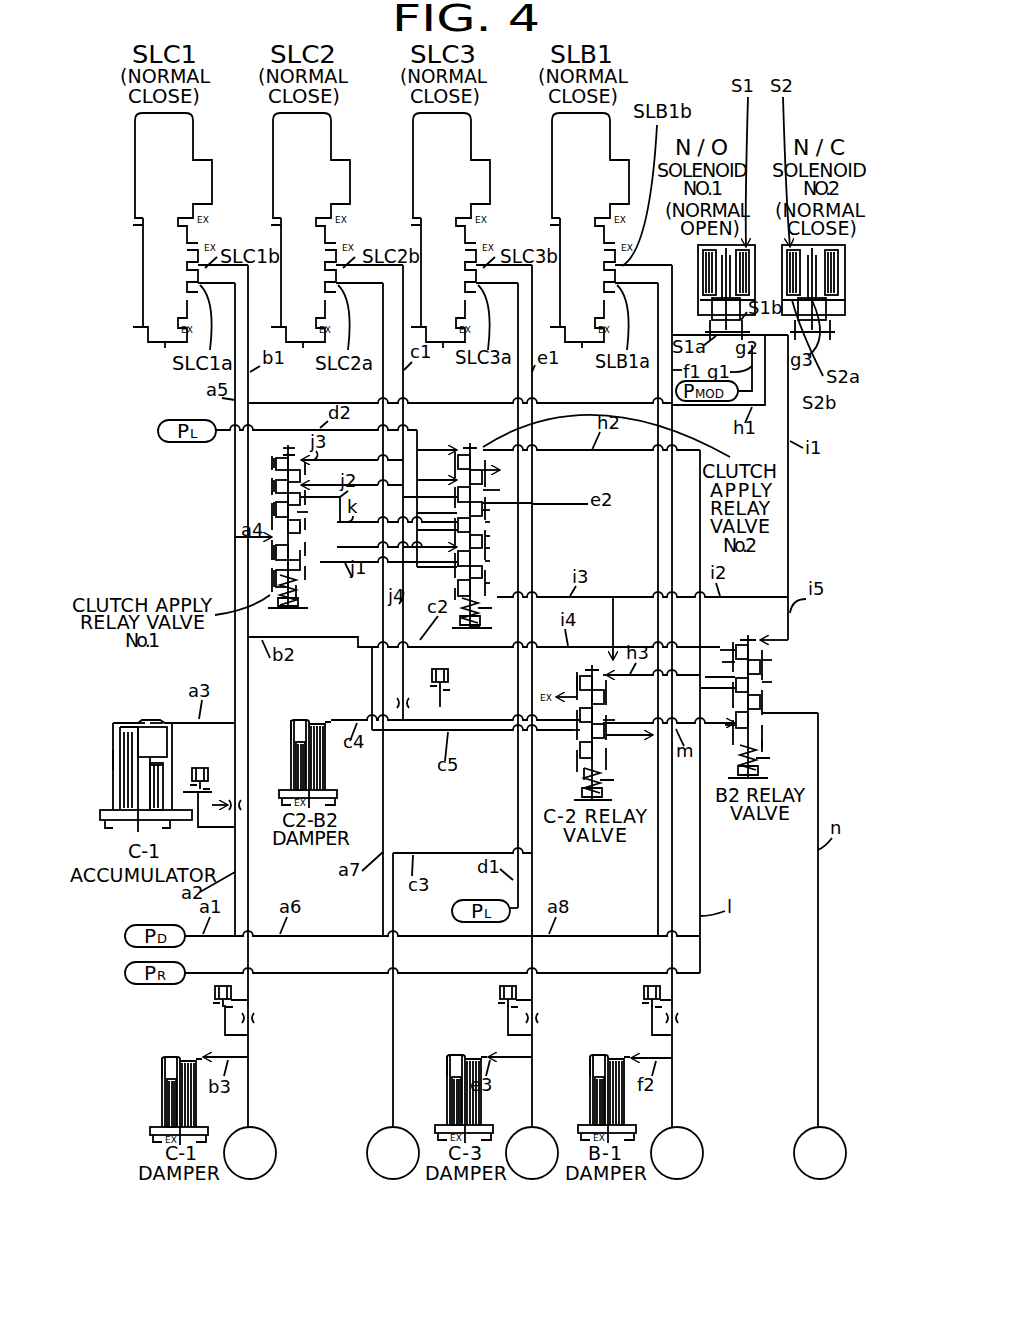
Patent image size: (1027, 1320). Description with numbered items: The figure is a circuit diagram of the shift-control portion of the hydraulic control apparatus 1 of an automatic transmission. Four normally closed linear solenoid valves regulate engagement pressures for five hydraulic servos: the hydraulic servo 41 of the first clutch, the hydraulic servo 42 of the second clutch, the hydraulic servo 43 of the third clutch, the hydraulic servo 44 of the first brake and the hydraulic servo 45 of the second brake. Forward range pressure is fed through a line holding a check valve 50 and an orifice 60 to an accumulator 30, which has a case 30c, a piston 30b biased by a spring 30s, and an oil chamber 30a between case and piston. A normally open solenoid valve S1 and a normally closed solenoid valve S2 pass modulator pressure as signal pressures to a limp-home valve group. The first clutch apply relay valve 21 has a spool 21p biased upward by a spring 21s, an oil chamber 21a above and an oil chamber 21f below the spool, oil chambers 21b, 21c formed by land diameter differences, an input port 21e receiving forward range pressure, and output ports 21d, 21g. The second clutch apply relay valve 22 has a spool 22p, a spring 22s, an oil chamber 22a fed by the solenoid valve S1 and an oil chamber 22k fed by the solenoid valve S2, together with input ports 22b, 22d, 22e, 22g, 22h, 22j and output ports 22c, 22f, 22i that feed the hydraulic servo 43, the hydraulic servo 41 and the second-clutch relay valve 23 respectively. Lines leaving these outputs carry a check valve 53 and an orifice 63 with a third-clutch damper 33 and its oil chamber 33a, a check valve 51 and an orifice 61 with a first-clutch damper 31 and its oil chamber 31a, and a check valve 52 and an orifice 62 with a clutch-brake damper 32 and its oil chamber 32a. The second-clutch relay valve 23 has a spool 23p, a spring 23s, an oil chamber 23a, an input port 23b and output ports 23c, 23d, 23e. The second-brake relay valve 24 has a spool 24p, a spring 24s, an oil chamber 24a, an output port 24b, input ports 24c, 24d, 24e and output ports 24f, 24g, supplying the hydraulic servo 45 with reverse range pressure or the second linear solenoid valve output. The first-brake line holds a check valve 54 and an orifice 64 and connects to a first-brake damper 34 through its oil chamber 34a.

The hydraulic control apparatus 1 is at (750, 45).
The first clutch apply relay valve 21 is at (278, 452).
The oil chamber 21a is at (290, 445).
The spool 21p is at (276, 462).
The oil chamber 21b is at (276, 485).
The oil chamber 21c is at (276, 506).
The output port 21d is at (303, 530).
The input port 21e is at (276, 551).
The oil chamber 21f is at (276, 576).
The output port 21g is at (300, 557).
The spring 21s is at (300, 590).
The second clutch apply relay valve 22 is at (462, 618).
The oil chamber 22a is at (483, 450).
The input port 22b is at (483, 471).
The output port 22c is at (485, 491).
The input port 22d is at (455, 445).
The input port 22e is at (455, 481).
The output port 22f is at (485, 526).
The input port 22g is at (485, 539).
The input port 22h is at (485, 551).
The output port 22i is at (485, 564).
The input port 22j is at (455, 568).
The oil chamber 22k is at (472, 621).
The spool 22p is at (483, 513).
The spring 22s is at (485, 586).
The C-2 relay valve 23 is at (595, 684).
The oil chamber 23a is at (605, 677).
The input port 23b is at (570, 720).
The output port 23c is at (573, 733).
The output port 23d is at (625, 721).
The output port 23e is at (615, 746).
The spool 23p is at (579, 683).
The spring 23s is at (580, 773).
The B-2 relay valve 24 is at (740, 633).
The oil chamber 24a is at (760, 637).
The output port 24b is at (720, 651).
The input port 24c is at (725, 655).
The input port 24d is at (722, 679).
The input port 24e is at (722, 729).
The output port 24f is at (764, 691).
The output port 24g is at (765, 713).
The spool 24p is at (762, 666).
The spring 24s is at (762, 746).
The accumulator 30 is at (116, 712).
The oil chamber 30a is at (138, 720).
The piston 30b is at (155, 722).
The case 30c is at (113, 761).
The spring 30s is at (150, 768).
The C-1 damper 31 is at (167, 1049).
The oil chamber 31a is at (162, 1068).
The C2-B2 damper 32 is at (300, 712).
The oil chamber 32a is at (292, 733).
The C-3 damper 33 is at (450, 1049).
The oil chamber 33a is at (447, 1067).
The B-1 damper 34 is at (600, 1049).
The oil chamber 34a is at (590, 1069).
The hydraulic servo 41 is at (265, 1128).
The hydraulic servo 42 is at (380, 1128).
The hydraulic servo 43 is at (548, 1128).
The hydraulic servo 44 is at (695, 1128).
The hydraulic servo 45 is at (805, 1128).
The check valve 50 is at (211, 764).
The check valve 51 is at (210, 994).
The check valve 52 is at (452, 679).
The check valve 53 is at (496, 995).
The check valve 54 is at (641, 993).
The orifice 60 is at (219, 826).
The orifice 61 is at (262, 1018).
The orifice 62 is at (400, 693).
The orifice 63 is at (541, 1014).
The orifice 64 is at (690, 1014).
The solenoid valve S1 is at (726, 292).
The solenoid valve S2 is at (813, 292).